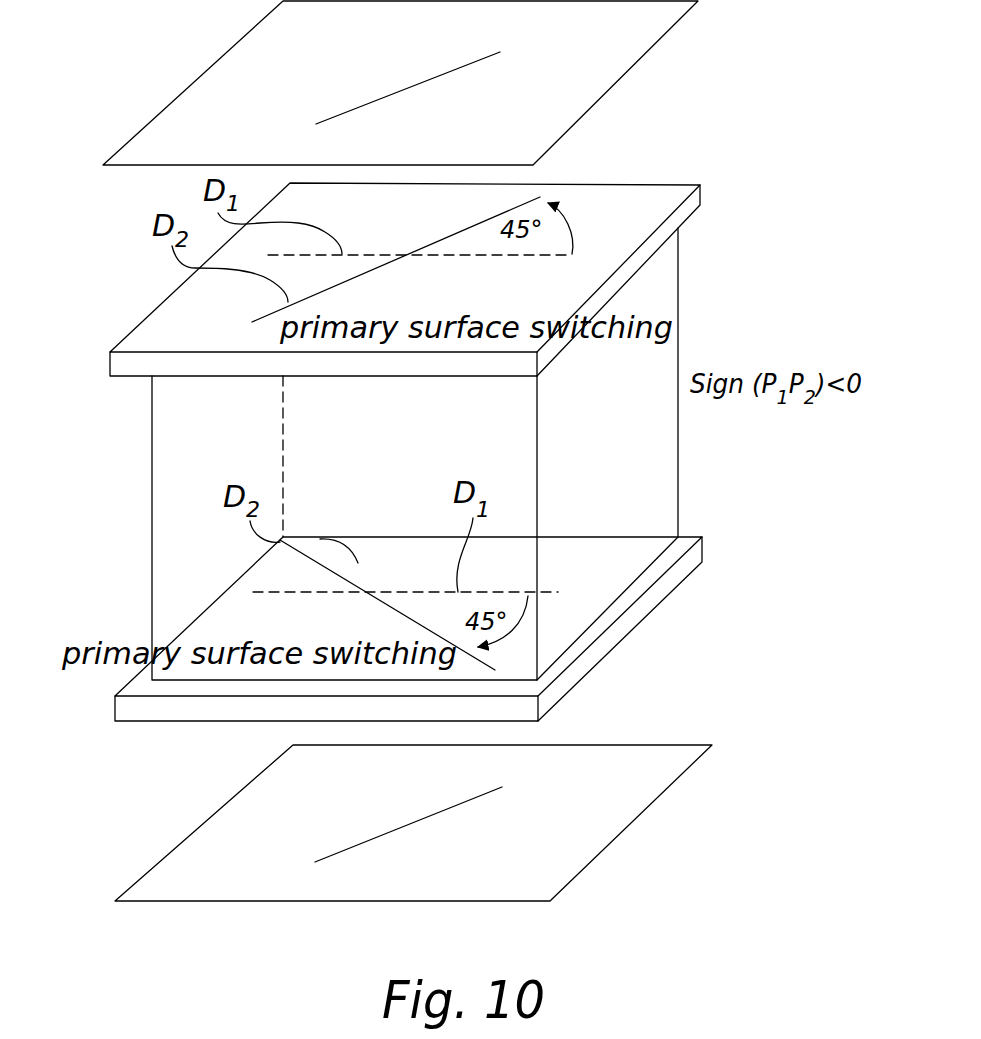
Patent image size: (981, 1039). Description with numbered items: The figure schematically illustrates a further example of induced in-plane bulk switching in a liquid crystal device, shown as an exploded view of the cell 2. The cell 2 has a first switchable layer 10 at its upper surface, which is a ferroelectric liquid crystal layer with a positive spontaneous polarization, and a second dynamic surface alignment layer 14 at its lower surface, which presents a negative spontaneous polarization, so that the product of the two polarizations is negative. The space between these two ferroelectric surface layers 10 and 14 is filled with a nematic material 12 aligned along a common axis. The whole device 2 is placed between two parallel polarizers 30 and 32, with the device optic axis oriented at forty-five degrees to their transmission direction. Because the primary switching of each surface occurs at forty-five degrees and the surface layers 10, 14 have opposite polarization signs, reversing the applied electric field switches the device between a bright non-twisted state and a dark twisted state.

The cell 2 is at (430, 438).
The first switchable layer 10 is at (700, 197).
The nematic material 12 is at (678, 296).
The second dynamic surface alignment layer 14 is at (702, 546).
The polarizer 30 is at (210, 74).
The polarizer 32 is at (212, 848).